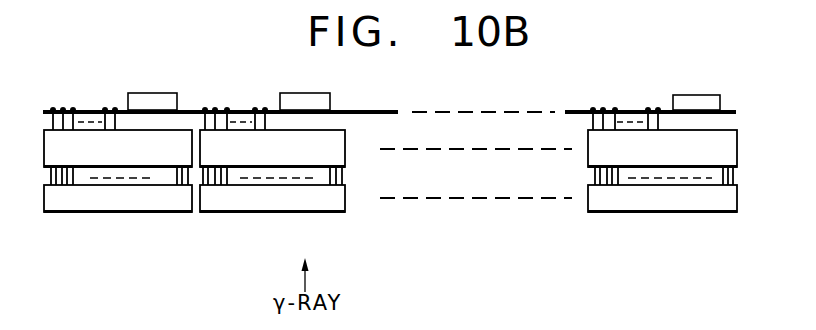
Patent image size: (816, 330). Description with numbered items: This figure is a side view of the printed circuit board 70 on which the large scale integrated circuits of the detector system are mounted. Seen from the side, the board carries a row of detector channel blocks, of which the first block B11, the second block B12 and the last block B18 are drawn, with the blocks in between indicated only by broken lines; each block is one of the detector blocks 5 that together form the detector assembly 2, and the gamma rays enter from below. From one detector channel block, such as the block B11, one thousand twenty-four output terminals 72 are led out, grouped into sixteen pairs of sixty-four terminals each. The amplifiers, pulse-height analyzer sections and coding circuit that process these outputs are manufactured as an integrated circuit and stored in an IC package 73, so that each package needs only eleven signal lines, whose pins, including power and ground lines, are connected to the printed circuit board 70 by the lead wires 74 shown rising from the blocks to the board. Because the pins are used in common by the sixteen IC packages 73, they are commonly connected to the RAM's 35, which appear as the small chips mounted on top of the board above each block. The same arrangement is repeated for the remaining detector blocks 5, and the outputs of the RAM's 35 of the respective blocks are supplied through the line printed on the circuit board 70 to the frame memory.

The radiation detector assembly 2 is at (719, 213).
The detector block 5 is at (178, 205).
The RAM 35 is at (170, 104).
The printed circuit board 70 is at (733, 110).
The output terminals 72 is at (738, 177).
The IC package 73 is at (740, 147).
The lead wires 74 is at (51, 121).
The detector channel block B11 is at (118, 189).
The detector block B12 is at (272, 189).
The detector block B18 is at (662, 189).